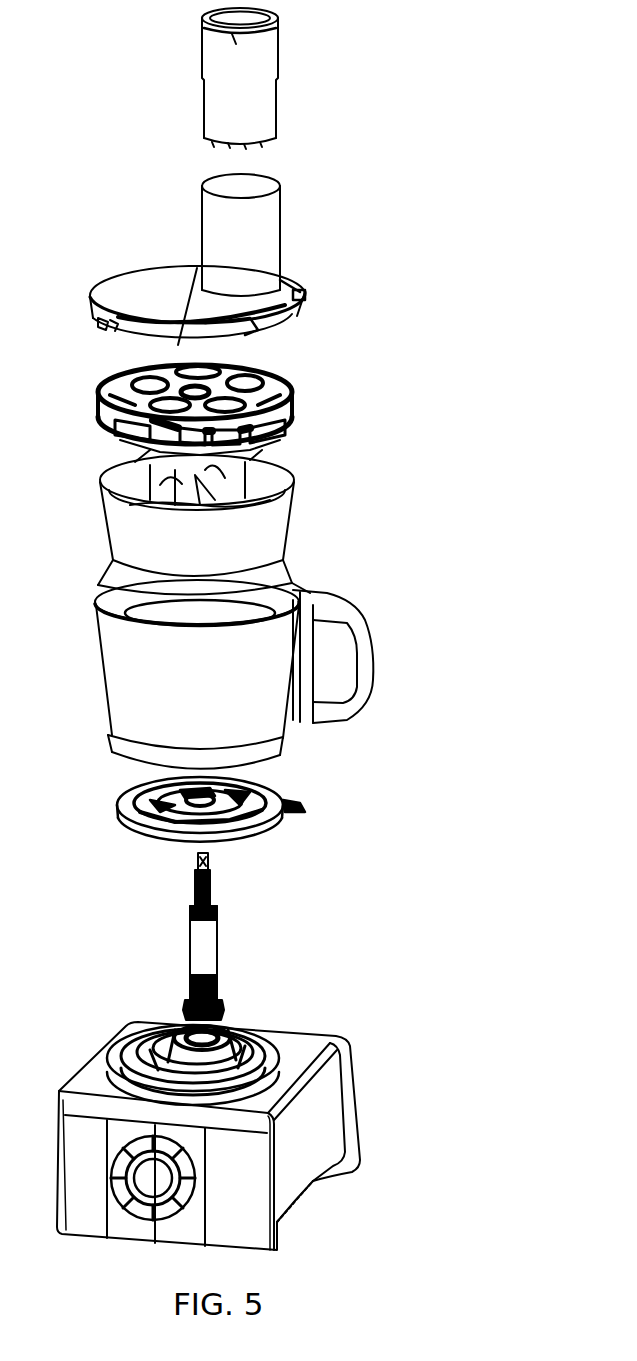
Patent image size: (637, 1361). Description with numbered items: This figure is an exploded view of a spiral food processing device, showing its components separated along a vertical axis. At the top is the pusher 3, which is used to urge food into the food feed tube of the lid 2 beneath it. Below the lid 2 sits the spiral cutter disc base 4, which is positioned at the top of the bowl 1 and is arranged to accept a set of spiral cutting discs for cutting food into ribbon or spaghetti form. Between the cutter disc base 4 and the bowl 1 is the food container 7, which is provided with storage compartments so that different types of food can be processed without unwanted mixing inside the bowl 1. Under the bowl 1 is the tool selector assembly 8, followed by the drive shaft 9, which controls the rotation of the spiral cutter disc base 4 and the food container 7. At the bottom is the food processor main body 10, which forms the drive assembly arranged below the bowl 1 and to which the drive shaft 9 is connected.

The bowl 1 is at (320, 600).
The lid 2 is at (290, 277).
The pusher 3 is at (255, 68).
The spiral cutter disc base 4 is at (290, 410).
The food container 7 is at (297, 515).
The tool selector assembly 8 is at (270, 828).
The drive shaft 9 is at (222, 930).
The food processor main body 10 is at (317, 1088).